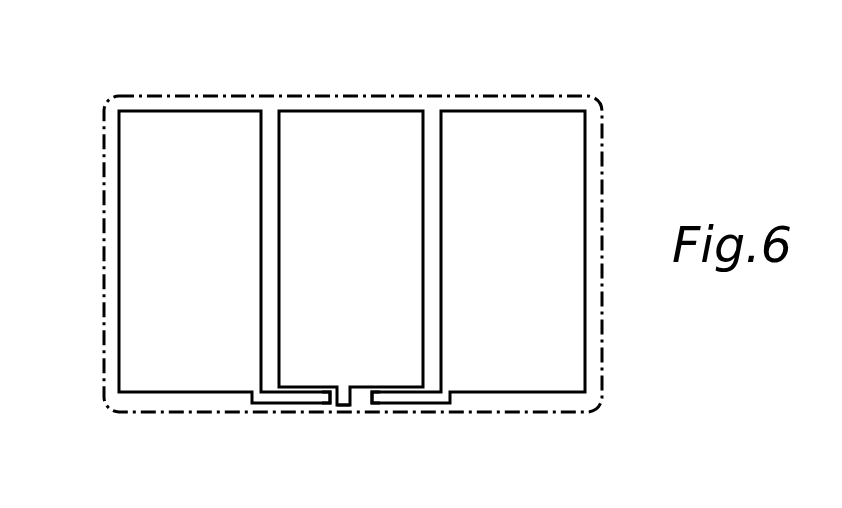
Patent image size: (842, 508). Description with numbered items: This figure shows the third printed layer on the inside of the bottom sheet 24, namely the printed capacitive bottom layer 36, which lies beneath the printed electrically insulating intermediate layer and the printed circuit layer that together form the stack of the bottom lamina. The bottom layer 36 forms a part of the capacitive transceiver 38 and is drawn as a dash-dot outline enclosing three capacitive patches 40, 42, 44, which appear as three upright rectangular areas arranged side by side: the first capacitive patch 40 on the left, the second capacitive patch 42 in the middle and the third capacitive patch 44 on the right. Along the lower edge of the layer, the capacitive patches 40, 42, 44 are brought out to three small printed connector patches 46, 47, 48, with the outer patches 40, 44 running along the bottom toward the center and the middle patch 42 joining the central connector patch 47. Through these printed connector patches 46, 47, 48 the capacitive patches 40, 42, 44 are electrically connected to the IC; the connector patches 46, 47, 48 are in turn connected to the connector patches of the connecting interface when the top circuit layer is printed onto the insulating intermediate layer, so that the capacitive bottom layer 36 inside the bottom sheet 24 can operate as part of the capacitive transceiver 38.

The bottom sheet 24 is at (344, 216).
The printed capacitive bottom layer 36 is at (383, 216).
The capacitive transceiver 38 is at (552, 88).
The capacitive patch 40 is at (210, 247).
The capacitive patch 42 is at (369, 247).
The capacitive patch 44 is at (530, 247).
The printed connector patch 46 is at (326, 405).
The printed connector patch 47 is at (344, 406).
The printed connector patch 48 is at (365, 405).